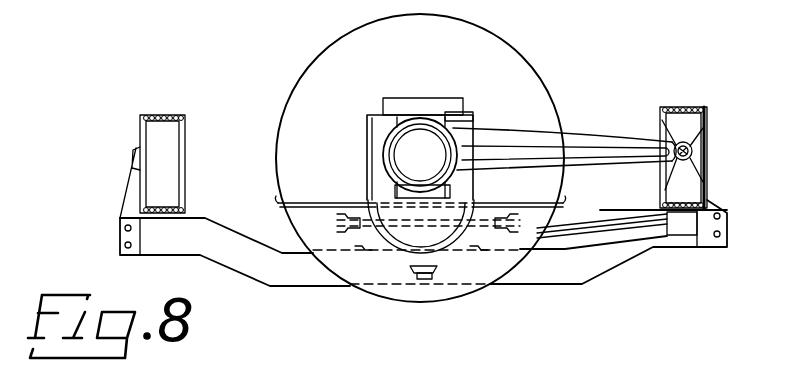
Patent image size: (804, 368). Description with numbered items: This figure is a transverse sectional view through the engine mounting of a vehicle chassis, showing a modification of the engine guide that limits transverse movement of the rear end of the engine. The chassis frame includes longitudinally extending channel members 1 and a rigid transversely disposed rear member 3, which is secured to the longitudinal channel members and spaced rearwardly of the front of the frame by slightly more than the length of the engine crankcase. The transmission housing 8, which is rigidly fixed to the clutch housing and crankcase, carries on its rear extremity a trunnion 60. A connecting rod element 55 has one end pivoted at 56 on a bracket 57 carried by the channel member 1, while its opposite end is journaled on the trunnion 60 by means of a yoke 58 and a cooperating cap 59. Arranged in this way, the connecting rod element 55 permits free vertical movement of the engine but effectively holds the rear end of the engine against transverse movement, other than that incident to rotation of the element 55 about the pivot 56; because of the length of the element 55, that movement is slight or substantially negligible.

The longitudinally extending channel member 1 is at (704, 180).
The rear transverse frame member 3 is at (232, 250).
The transmission housing 8 is at (466, 119).
The connecting rod element 55 is at (551, 154).
The pivot 56 is at (686, 143).
The bracket 57 is at (667, 135).
The yoke 58 is at (436, 114).
The cap 59 is at (388, 152).
The trunnion 60 is at (436, 140).